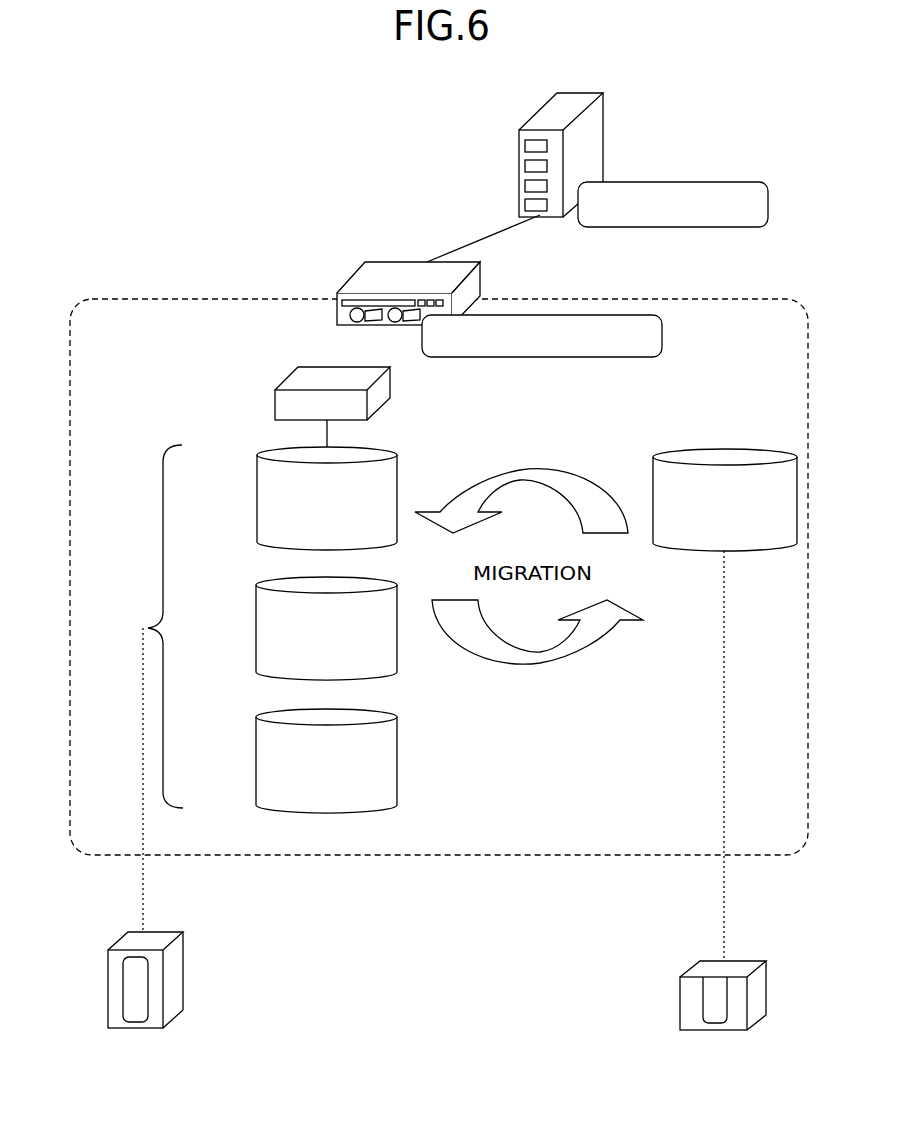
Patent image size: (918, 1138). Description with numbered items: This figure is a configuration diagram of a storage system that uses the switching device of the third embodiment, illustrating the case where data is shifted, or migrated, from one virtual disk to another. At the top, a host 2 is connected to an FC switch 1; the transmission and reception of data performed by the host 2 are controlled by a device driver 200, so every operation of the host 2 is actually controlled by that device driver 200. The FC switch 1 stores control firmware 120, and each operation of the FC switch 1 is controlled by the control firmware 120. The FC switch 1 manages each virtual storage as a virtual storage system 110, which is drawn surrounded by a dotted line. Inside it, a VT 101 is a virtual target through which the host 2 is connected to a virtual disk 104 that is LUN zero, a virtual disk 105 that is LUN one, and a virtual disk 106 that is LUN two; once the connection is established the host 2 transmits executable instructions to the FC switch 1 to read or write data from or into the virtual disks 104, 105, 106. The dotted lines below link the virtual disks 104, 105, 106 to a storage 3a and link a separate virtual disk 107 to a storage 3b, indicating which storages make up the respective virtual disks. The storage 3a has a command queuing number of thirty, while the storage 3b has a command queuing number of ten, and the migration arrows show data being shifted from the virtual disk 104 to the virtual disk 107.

The FC switch 1 is at (383, 262).
The host 2 is at (603, 140).
The device driver 200 is at (768, 206).
The virtual storage system 110 is at (740, 299).
The control firmware 120 is at (662, 338).
The VT 101 is at (275, 408).
The virtual disk 104 is at (257, 487).
The virtual disk 105 is at (255, 613).
The virtual disk 106 is at (255, 745).
The virtual disk 107 is at (748, 449).
The storage 3a is at (183, 955).
The storage 3b is at (766, 983).